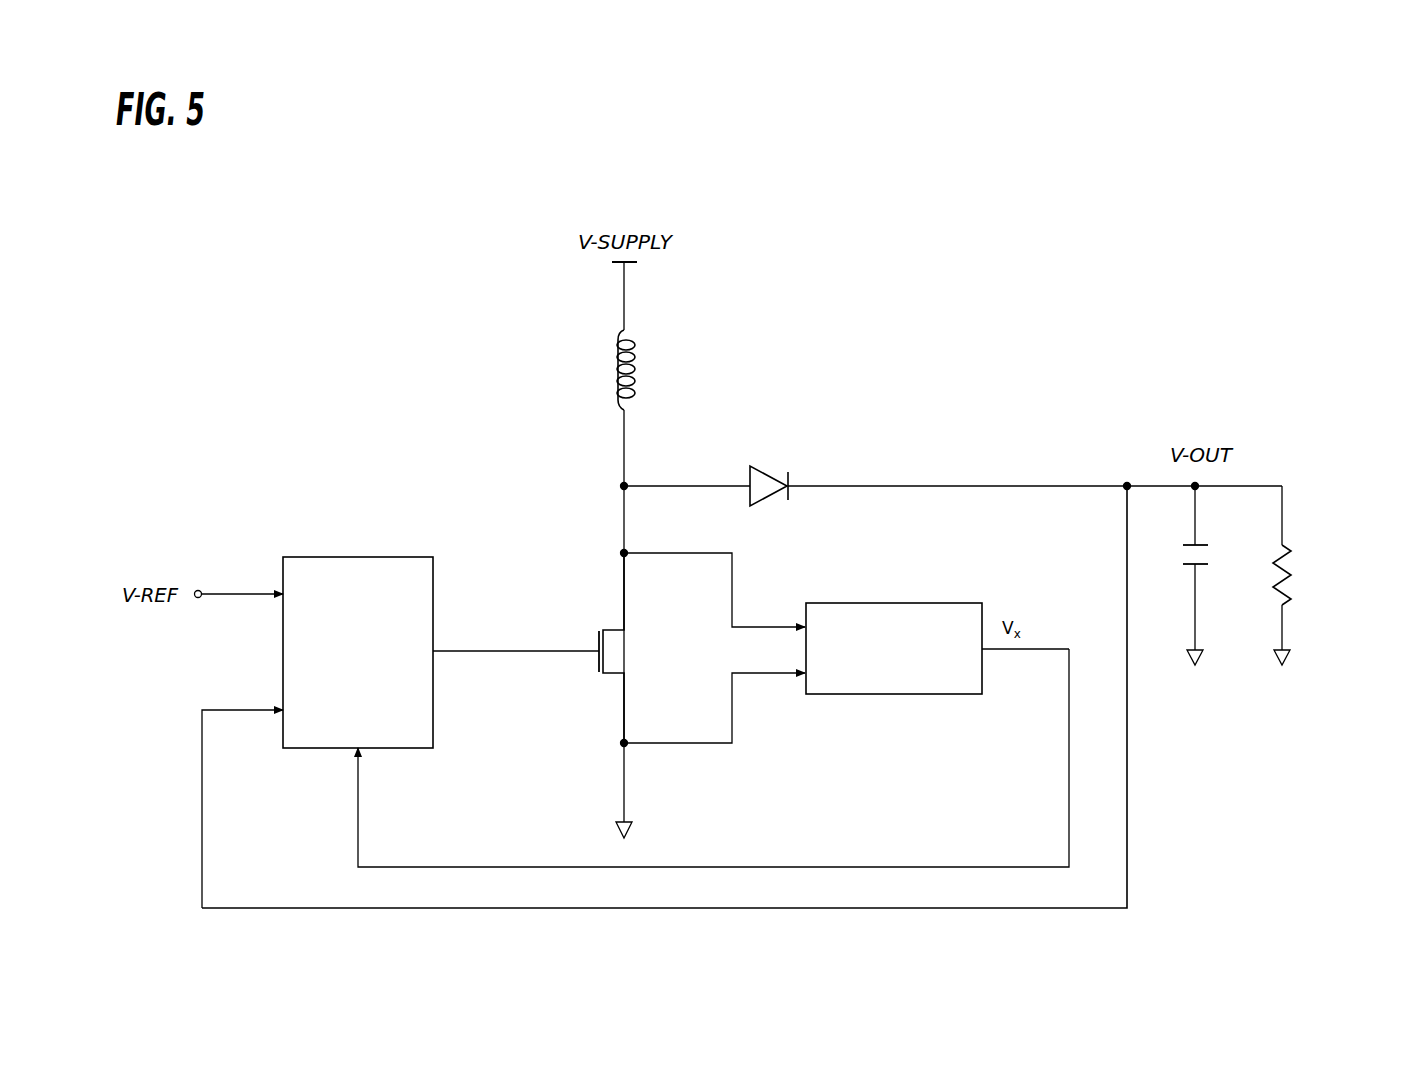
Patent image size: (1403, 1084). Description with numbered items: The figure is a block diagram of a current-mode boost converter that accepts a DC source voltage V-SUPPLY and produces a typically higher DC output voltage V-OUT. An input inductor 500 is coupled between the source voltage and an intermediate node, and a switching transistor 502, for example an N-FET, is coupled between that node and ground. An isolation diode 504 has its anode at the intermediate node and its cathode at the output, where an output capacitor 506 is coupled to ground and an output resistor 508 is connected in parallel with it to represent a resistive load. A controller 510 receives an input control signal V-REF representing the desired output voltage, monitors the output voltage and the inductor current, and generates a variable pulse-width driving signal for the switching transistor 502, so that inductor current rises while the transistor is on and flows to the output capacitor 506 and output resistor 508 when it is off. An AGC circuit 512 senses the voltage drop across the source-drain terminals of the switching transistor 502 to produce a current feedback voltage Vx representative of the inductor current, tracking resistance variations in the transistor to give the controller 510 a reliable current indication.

The input inductor 500 is at (633, 371).
The switching transistor 502 is at (628, 652).
The isolation diode 504 is at (768, 470).
The output capacitor 506 is at (1182, 572).
The output resistor 508 is at (1284, 550).
The controller 510 is at (357, 557).
The AGC circuit 512 is at (875, 603).